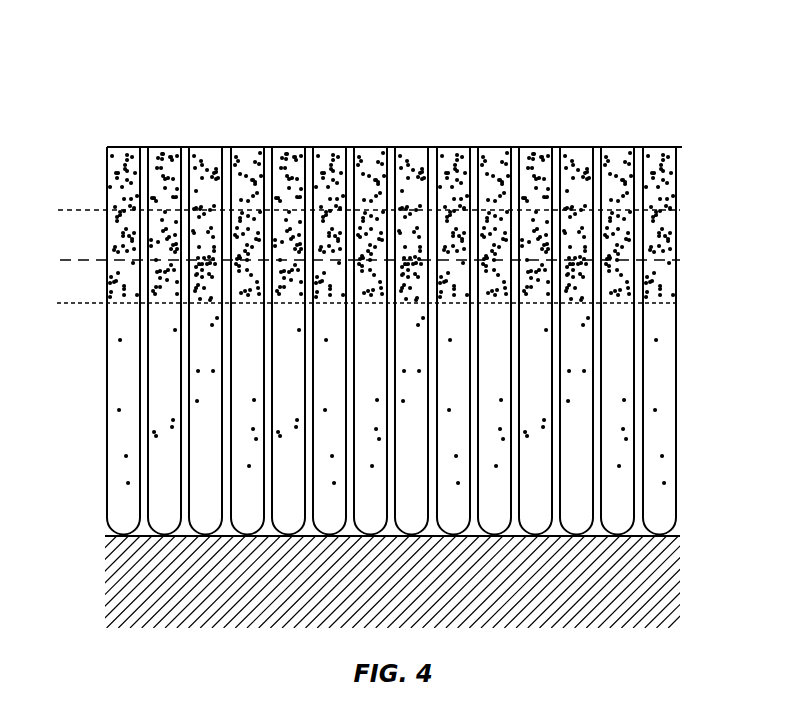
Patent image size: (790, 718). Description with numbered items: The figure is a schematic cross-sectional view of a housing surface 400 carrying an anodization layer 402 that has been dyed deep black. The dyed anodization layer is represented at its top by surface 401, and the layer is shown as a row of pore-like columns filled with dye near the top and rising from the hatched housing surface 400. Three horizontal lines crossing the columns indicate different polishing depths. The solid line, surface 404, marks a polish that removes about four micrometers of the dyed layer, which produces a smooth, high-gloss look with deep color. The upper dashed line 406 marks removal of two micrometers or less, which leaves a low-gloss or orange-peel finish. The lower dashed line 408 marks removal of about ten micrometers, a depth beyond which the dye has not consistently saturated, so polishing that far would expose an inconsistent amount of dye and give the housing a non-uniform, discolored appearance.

The housing surface 400 is at (78, 90).
The surface 401 is at (541, 146).
The anodization layer 402 is at (688, 146).
The surface 404 is at (60, 260).
The dashed line 406 is at (73, 206).
The dashed line 408 is at (85, 308).